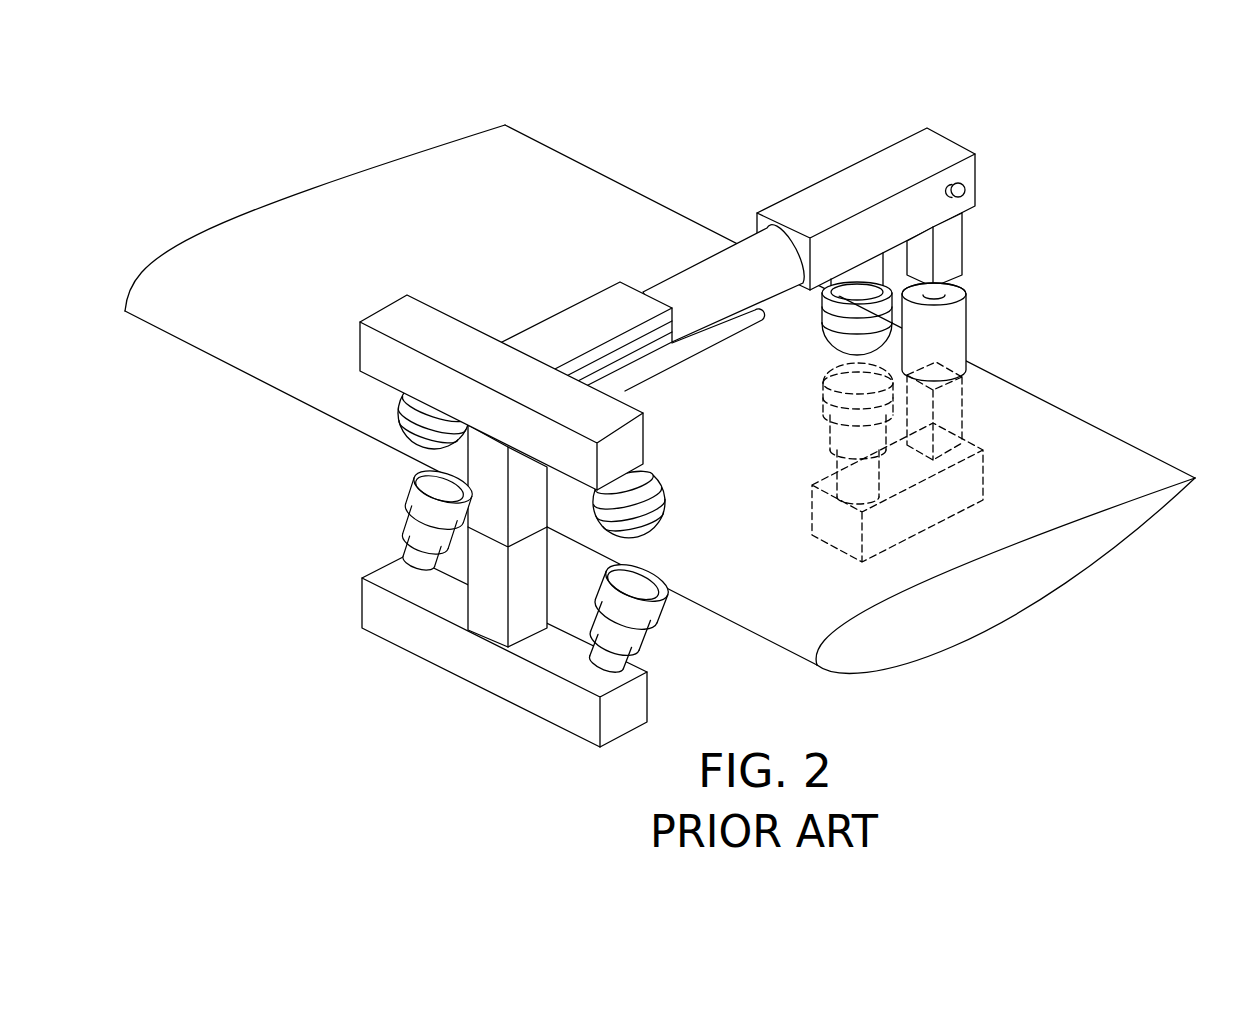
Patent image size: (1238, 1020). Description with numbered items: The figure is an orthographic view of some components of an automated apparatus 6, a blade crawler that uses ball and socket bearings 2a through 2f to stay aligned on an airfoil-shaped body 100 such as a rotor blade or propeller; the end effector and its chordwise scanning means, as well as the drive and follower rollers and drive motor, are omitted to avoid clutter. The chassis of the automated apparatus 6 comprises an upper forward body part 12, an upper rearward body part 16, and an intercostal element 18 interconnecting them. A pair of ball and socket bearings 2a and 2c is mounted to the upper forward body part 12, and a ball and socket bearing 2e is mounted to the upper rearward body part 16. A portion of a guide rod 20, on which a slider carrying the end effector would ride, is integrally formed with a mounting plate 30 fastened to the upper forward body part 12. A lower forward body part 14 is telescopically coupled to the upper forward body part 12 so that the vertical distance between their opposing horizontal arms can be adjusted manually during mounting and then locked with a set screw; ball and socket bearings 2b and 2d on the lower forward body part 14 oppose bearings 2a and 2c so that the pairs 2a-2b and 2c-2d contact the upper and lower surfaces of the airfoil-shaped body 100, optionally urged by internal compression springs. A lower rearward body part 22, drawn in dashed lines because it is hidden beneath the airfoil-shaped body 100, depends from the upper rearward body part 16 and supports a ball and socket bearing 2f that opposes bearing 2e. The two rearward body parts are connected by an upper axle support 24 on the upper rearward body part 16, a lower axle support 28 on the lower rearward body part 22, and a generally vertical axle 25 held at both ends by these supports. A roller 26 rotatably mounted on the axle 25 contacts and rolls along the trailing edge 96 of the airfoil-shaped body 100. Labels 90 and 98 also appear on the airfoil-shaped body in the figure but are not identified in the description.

The automated apparatus 6 is at (768, 96).
The upper forward body part 12 is at (360, 373).
The lower forward body part 14 is at (487, 681).
The upper rearward body part 16 is at (950, 142).
The intercostal element 18 is at (693, 263).
The guide rod 20 is at (703, 350).
The lower rearward body part 22 is at (983, 470).
The upper axle support 24 is at (960, 248).
The axle 25 is at (950, 279).
The roller 26 is at (967, 323).
The lower axle support 28 is at (963, 425).
The mounting plate 30 is at (606, 362).
The wing 90 is at (255, 249).
The trailing edge 96 is at (528, 135).
The lower edge 98 is at (190, 350).
The airfoil-shaped body 100 is at (362, 180).
The ball and socket bearing 2a is at (413, 428).
The ball and socket bearing 2b is at (418, 501).
The ball and socket bearing 2c is at (662, 503).
The ball and socket bearing 2d is at (660, 600).
The ball and socket bearing 2e is at (828, 319).
The ball and socket bearing 2f is at (843, 410).